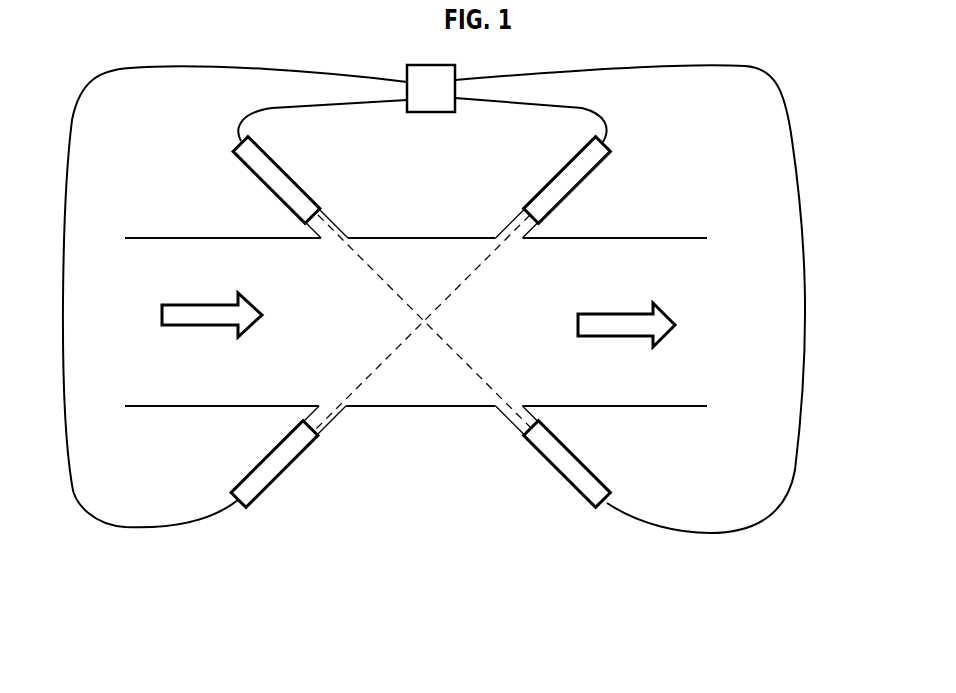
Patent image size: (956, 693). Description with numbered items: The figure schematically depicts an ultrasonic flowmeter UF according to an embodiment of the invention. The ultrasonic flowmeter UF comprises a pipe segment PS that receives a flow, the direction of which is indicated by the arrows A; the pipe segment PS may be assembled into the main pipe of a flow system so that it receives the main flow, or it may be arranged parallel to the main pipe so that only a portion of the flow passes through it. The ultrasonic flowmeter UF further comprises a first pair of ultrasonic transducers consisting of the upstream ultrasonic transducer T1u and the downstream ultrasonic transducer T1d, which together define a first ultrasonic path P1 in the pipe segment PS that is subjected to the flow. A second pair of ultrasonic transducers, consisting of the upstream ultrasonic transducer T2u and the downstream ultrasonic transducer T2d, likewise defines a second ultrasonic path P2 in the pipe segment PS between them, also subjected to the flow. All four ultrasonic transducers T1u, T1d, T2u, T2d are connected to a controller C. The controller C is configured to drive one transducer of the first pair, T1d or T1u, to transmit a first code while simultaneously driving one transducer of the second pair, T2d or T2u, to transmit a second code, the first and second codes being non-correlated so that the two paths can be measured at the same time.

The ultrasonic flowmeter UF is at (441, 535).
The controller C is at (431, 88).
The pipe segment PS is at (433, 407).
The upstream ultrasonic transducer T1u is at (275, 177).
The downstream ultrasonic transducer T2d is at (592, 168).
The upstream ultrasonic transducer T2u is at (277, 468).
The downstream ultrasonic transducer T1d is at (562, 460).
The first ultrasonic path P1 is at (480, 377).
The second ultrasonic path P2 is at (468, 282).
The arrows A is at (628, 323).